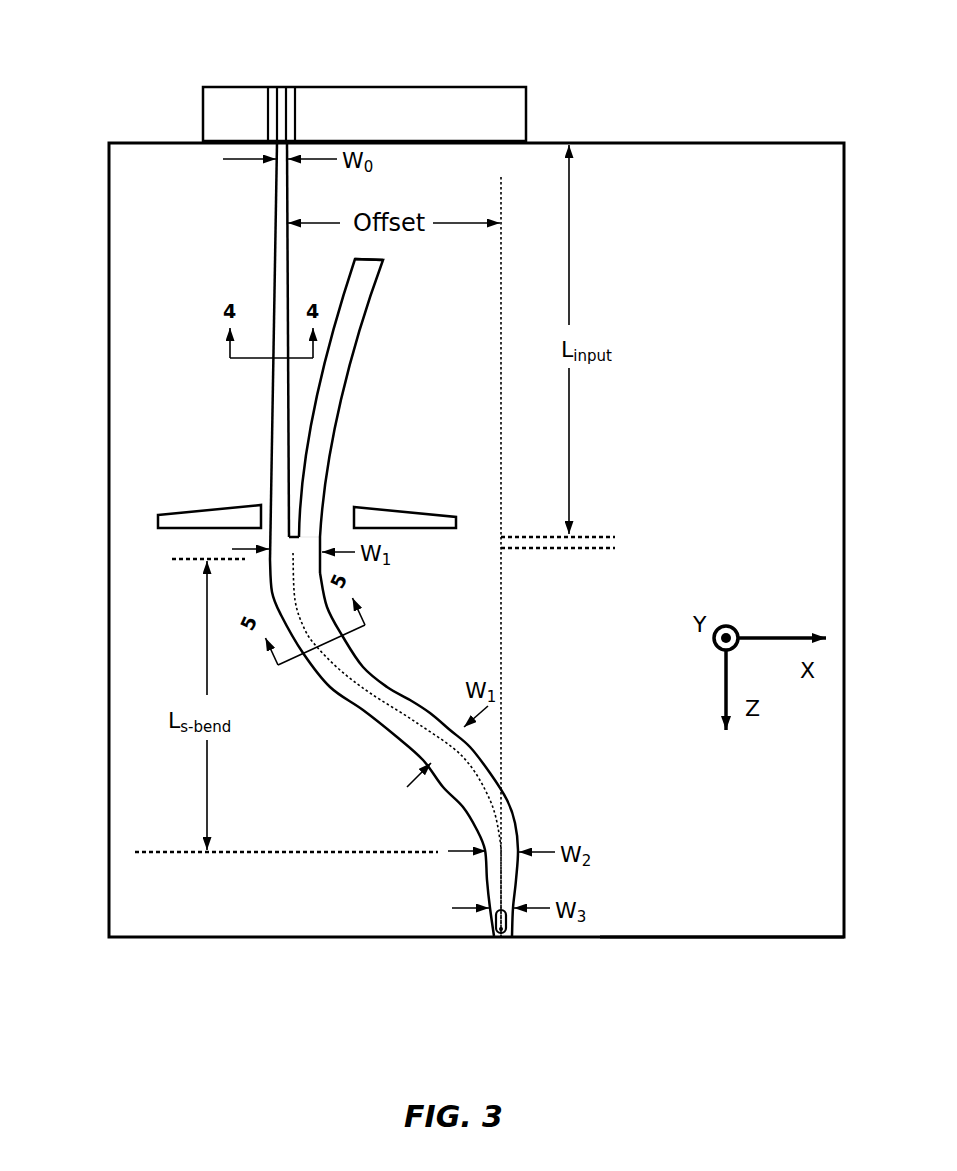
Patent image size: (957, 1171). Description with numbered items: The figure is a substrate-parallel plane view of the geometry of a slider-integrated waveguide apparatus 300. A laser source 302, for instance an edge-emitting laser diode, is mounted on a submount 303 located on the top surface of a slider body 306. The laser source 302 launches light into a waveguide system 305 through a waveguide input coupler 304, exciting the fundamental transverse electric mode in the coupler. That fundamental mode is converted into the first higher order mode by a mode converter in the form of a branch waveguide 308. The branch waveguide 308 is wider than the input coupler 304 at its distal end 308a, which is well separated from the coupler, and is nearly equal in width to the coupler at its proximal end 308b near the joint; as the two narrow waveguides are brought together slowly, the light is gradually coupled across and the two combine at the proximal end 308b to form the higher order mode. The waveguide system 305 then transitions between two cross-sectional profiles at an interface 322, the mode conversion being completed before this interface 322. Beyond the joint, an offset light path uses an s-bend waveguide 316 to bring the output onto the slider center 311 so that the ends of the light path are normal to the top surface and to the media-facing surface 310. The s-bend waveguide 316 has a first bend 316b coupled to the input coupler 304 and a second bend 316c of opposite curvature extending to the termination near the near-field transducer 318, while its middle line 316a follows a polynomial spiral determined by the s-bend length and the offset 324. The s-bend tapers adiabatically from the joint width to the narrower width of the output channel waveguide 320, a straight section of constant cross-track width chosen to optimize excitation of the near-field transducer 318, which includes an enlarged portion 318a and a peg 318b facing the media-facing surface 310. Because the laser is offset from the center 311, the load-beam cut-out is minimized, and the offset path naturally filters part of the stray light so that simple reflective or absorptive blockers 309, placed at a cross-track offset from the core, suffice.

The slider-integrated waveguide apparatus 300 is at (116, 48).
The laser source 302 is at (268, 111).
The submount 303 is at (512, 103).
The waveguide input coupler 304 is at (277, 174).
The waveguide system 305 is at (549, 597).
The slider body 306 is at (124, 142).
The branch waveguide 308 is at (333, 425).
The distal end 308a is at (383, 276).
The proximal end 308b is at (305, 536).
The blockers 309 is at (215, 507).
The media-facing surface 310 is at (720, 937).
The slider center 311 is at (499, 370).
The s-bend waveguide 316 is at (443, 715).
The s-bend middle line 316a is at (392, 700).
The first bend 316b is at (317, 675).
The second bend 316c is at (455, 790).
The near-field transducer 318 is at (495, 924).
The enlarged portion 318a is at (508, 925).
The peg 318b is at (501, 937).
The output channel waveguide 320 is at (488, 872).
The interface 322 is at (615, 548).
The offset 324 is at (458, 222).